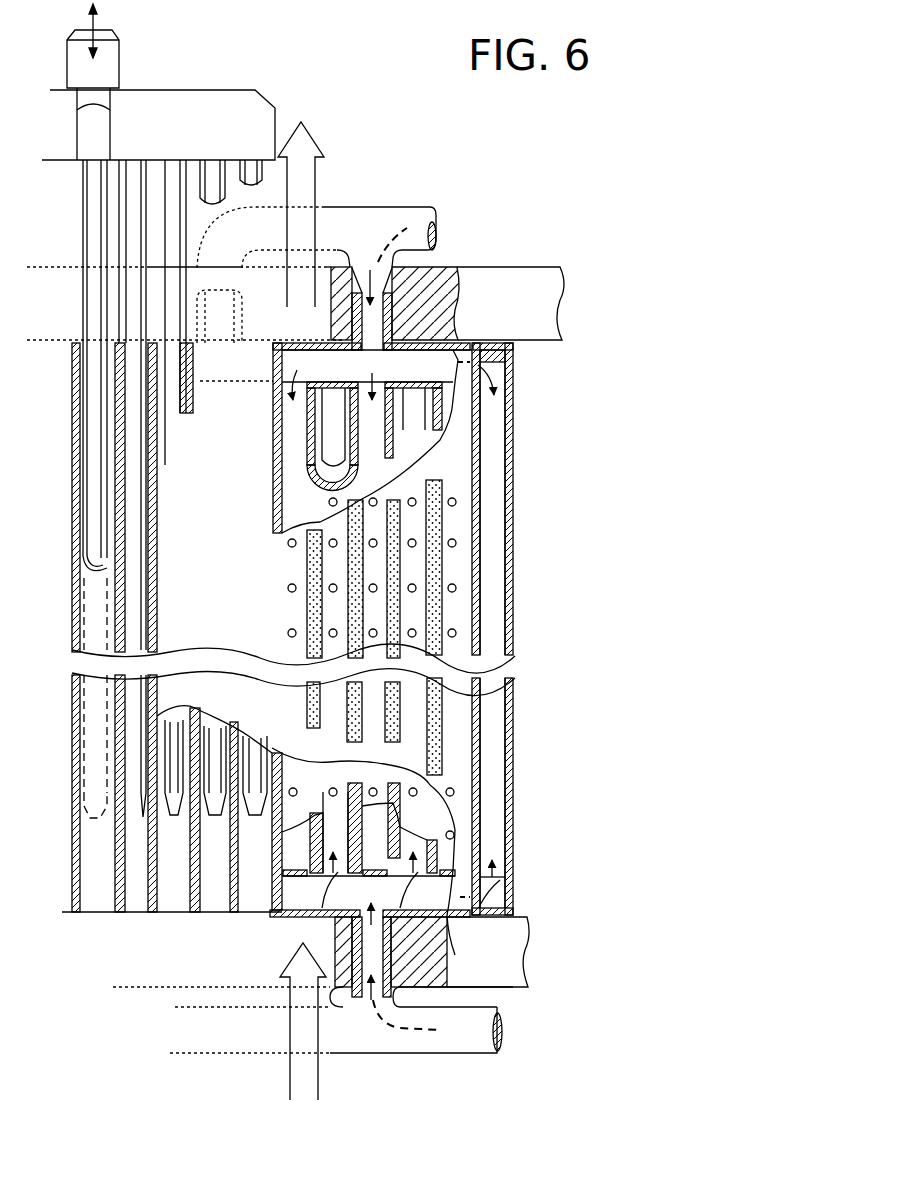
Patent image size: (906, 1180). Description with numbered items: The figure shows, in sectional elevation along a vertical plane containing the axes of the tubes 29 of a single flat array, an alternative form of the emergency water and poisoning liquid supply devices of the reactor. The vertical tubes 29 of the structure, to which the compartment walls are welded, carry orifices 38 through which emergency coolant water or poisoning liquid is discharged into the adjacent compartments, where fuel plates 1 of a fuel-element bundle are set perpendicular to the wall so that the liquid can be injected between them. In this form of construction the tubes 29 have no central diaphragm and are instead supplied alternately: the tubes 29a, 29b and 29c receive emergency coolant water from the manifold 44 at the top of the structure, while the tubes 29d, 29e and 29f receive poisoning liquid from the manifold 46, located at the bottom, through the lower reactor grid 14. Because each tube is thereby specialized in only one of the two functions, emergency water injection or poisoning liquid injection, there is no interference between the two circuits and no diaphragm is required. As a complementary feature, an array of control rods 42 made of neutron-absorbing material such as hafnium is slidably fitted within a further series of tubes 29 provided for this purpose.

The fuel plates 1 is at (430, 713).
The lower reactor grid 14 is at (500, 980).
The vertical tubes 29 is at (72, 447).
The tube 29a is at (295, 490).
The tube 29b is at (370, 420).
The tube 29c is at (450, 402).
The tube 29d is at (283, 918).
The tube 29e is at (425, 880).
The tube 29f is at (497, 893).
The orifices 38 is at (460, 617).
The control rods 42 is at (133, 210).
The manifold 44 is at (433, 233).
The manifold 46 is at (503, 1037).